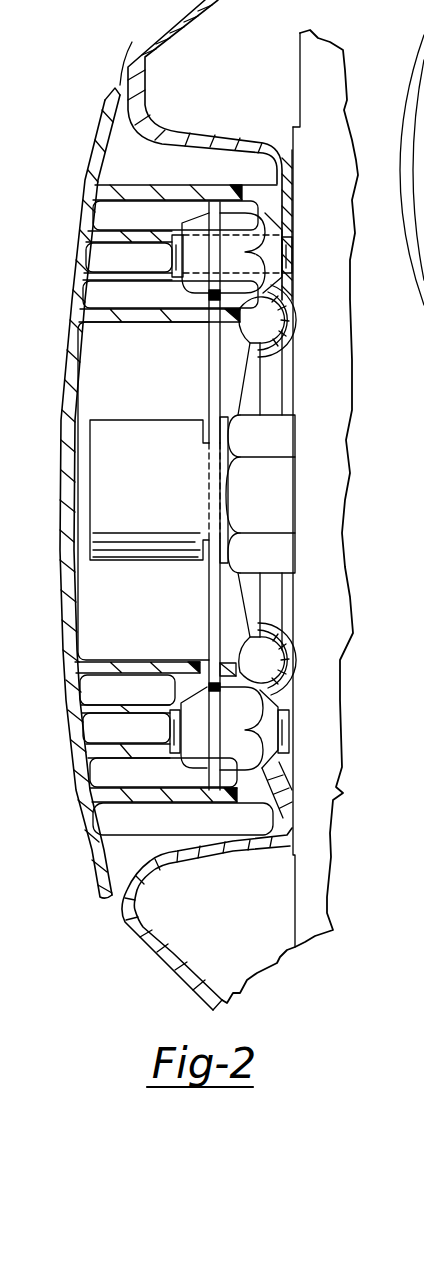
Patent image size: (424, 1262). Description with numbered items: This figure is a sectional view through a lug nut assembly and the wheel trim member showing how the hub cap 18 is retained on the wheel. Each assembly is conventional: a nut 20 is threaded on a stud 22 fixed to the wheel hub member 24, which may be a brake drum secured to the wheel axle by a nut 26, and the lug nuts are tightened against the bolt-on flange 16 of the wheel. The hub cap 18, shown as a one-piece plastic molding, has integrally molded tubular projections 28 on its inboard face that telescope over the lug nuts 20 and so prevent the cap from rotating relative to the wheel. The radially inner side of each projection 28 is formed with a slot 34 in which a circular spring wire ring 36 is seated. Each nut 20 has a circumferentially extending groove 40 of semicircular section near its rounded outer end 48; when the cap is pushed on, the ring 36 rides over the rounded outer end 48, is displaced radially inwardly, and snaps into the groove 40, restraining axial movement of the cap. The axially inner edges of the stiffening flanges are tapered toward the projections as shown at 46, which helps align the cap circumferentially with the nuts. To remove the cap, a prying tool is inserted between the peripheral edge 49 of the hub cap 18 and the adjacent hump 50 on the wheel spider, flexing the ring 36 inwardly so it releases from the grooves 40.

The bolt-on flange 16 is at (296, 319).
The hub cap 18 is at (68, 318).
The nut 20 is at (273, 230).
The stud 22 is at (293, 258).
The wheel hub member 24 is at (310, 437).
The nut 26 is at (283, 512).
The tubular projection 28 is at (150, 187).
The slot 34 is at (207, 420).
The spring wire ring 36 is at (210, 590).
The groove 40 is at (225, 217).
The tapered edge 46 is at (246, 392).
The rounded outer end 48 is at (187, 687).
The peripheral edge 49 is at (132, 44).
The hump 50 is at (145, 82).